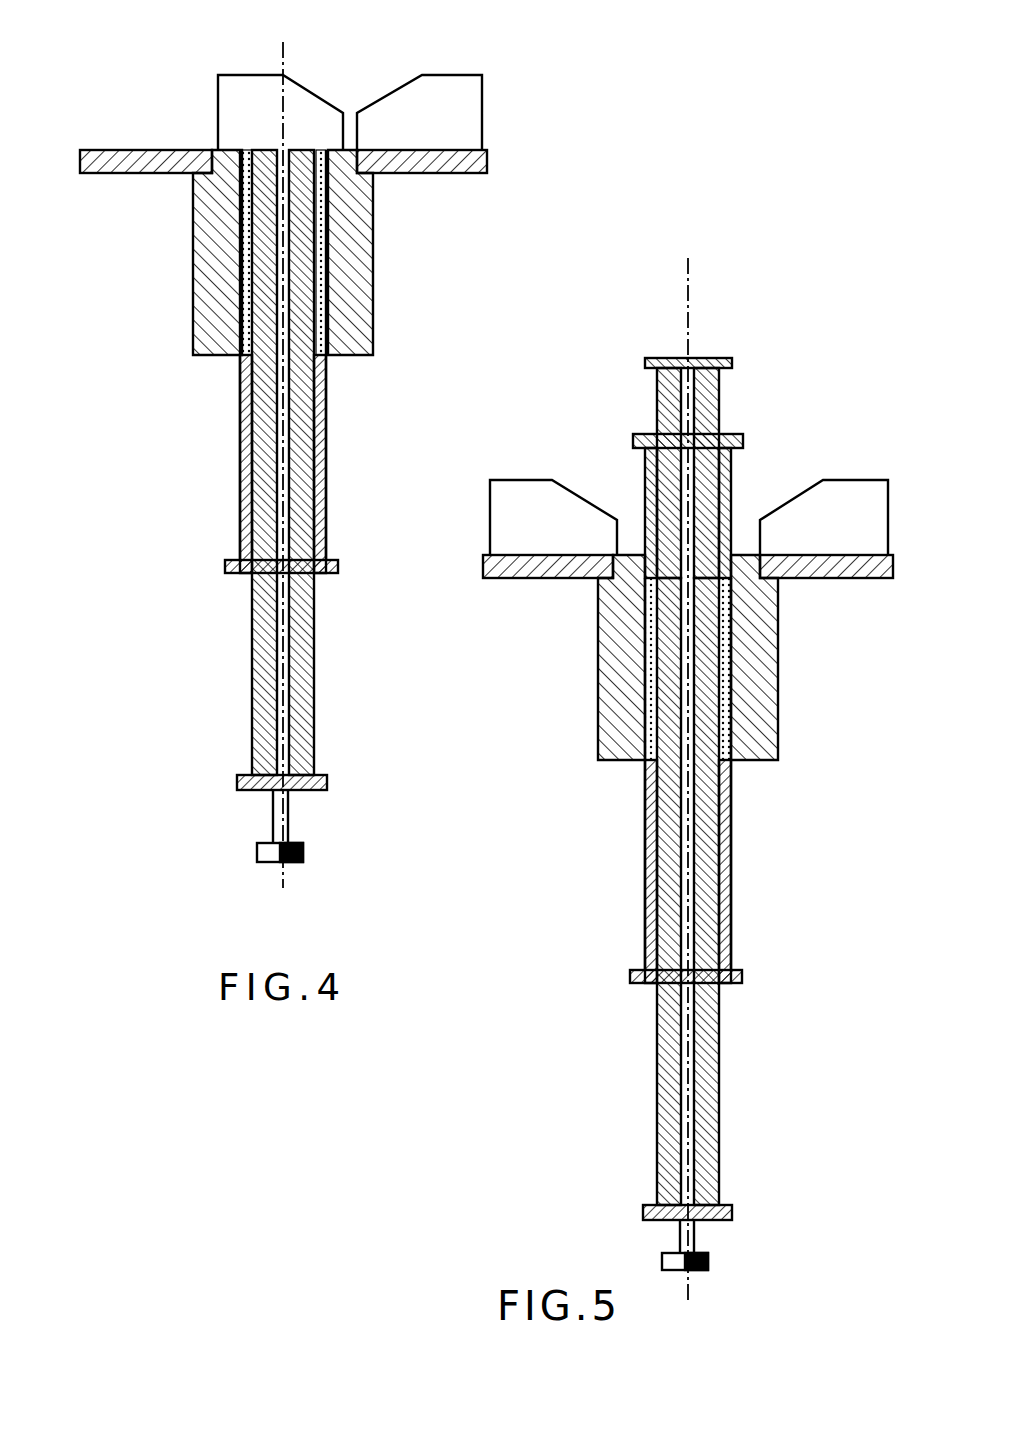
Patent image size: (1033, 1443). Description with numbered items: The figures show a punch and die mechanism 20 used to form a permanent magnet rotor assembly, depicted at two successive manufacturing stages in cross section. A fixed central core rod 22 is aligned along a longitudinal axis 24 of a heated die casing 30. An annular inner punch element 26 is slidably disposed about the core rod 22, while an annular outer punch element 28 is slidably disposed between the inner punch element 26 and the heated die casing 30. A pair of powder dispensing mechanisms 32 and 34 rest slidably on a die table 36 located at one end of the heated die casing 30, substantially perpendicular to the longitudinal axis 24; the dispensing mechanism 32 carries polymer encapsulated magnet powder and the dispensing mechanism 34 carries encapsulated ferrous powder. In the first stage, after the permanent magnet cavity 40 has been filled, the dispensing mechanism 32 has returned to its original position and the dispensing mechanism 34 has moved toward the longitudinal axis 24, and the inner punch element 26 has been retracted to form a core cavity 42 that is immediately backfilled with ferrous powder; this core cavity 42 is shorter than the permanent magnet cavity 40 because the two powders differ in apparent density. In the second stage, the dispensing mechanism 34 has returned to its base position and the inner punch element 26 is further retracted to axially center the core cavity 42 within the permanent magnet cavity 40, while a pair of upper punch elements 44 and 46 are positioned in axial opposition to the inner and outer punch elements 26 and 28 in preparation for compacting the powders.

In FIG. 4, the punch and die mechanism 20 is at (96, 290).
In FIG. 5, the punch and die mechanism 20 is at (526, 715).
In FIG. 4, the central core rod 22 is at (278, 818).
In FIG. 5, the central core rod 22 is at (690, 1233).
In FIG. 4, the longitudinal axis 24 is at (287, 57).
In FIG. 5, the longitudinal axis 24 is at (692, 323).
In FIG. 4, the inner punch element 26 is at (258, 637).
In FIG. 5, the inner punch element 26 is at (662, 1046).
In FIG. 4, the outer punch element 28 is at (240, 430).
In FIG. 5, the outer punch element 28 is at (655, 848).
In FIG. 4, the heated die casing 30 is at (347, 285).
In FIG. 5, the heated die casing 30 is at (760, 700).
In FIG. 4, the powder dispensing mechanism 32 is at (465, 122).
In FIG. 5, the powder dispensing mechanism 32 is at (820, 503).
In FIG. 4, the powder dispensing mechanism 34 is at (242, 90).
In FIG. 5, the powder dispensing mechanism 34 is at (547, 515).
In FIG. 4, the die table 36 is at (410, 172).
In FIG. 5, the die table 36 is at (818, 580).
In FIG. 4, the permanent magnet cavity 40 is at (242, 220).
In FIG. 5, the permanent magnet cavity 40 is at (640, 603).
In FIG. 4, the core cavity 42 is at (262, 267).
In FIG. 5, the core cavity 42 is at (670, 658).
In FIG. 5, the upper punch element 44 is at (712, 402).
In FIG. 5, the upper punch element 46 is at (643, 487).